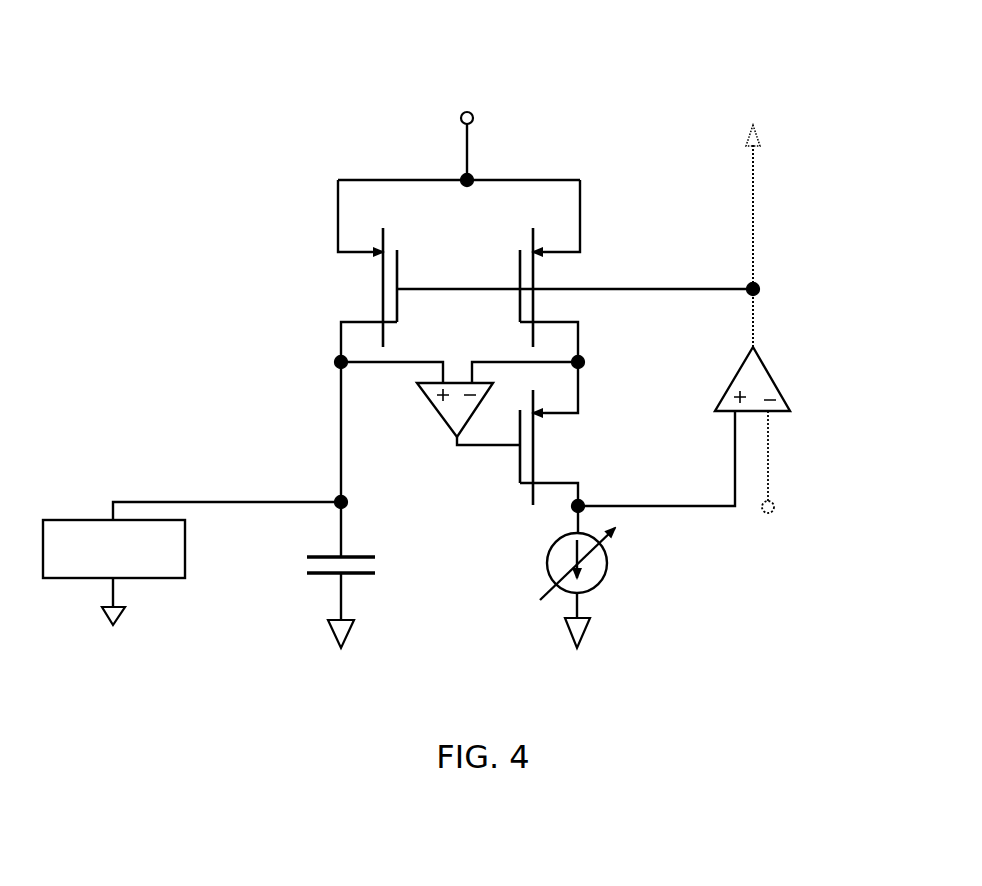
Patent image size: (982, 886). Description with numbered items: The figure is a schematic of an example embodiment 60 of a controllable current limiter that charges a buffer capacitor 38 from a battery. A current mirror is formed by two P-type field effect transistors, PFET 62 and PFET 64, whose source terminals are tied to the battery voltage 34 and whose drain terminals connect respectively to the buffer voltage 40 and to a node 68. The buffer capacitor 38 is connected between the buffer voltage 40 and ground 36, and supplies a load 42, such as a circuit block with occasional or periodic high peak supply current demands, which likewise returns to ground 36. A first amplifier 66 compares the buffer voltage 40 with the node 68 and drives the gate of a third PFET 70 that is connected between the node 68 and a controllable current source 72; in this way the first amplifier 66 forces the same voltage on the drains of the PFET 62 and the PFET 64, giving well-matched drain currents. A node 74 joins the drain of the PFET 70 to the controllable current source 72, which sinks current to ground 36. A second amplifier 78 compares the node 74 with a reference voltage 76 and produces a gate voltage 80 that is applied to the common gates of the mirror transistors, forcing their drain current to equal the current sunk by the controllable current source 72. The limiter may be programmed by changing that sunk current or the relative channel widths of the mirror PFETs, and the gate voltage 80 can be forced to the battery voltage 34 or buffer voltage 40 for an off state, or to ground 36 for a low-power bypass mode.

The current limiter 60 is at (578, 50).
The battery voltage 34 is at (455, 116).
The PFET 62 is at (358, 289).
The PFET 64 is at (585, 268).
The buffer voltage 40 is at (334, 334).
The node 68 is at (588, 333).
The first amplifier 66 is at (430, 422).
The PFET 70 is at (580, 449).
The node 74 is at (680, 504).
The controllable current source 72 is at (608, 569).
The buffer capacitor 38 is at (372, 553).
The load 42 is at (174, 543).
The ground 36 is at (350, 628).
The second amplifier 78 is at (768, 369).
The gate voltage 80 is at (760, 153).
The reference voltage 76 is at (775, 509).